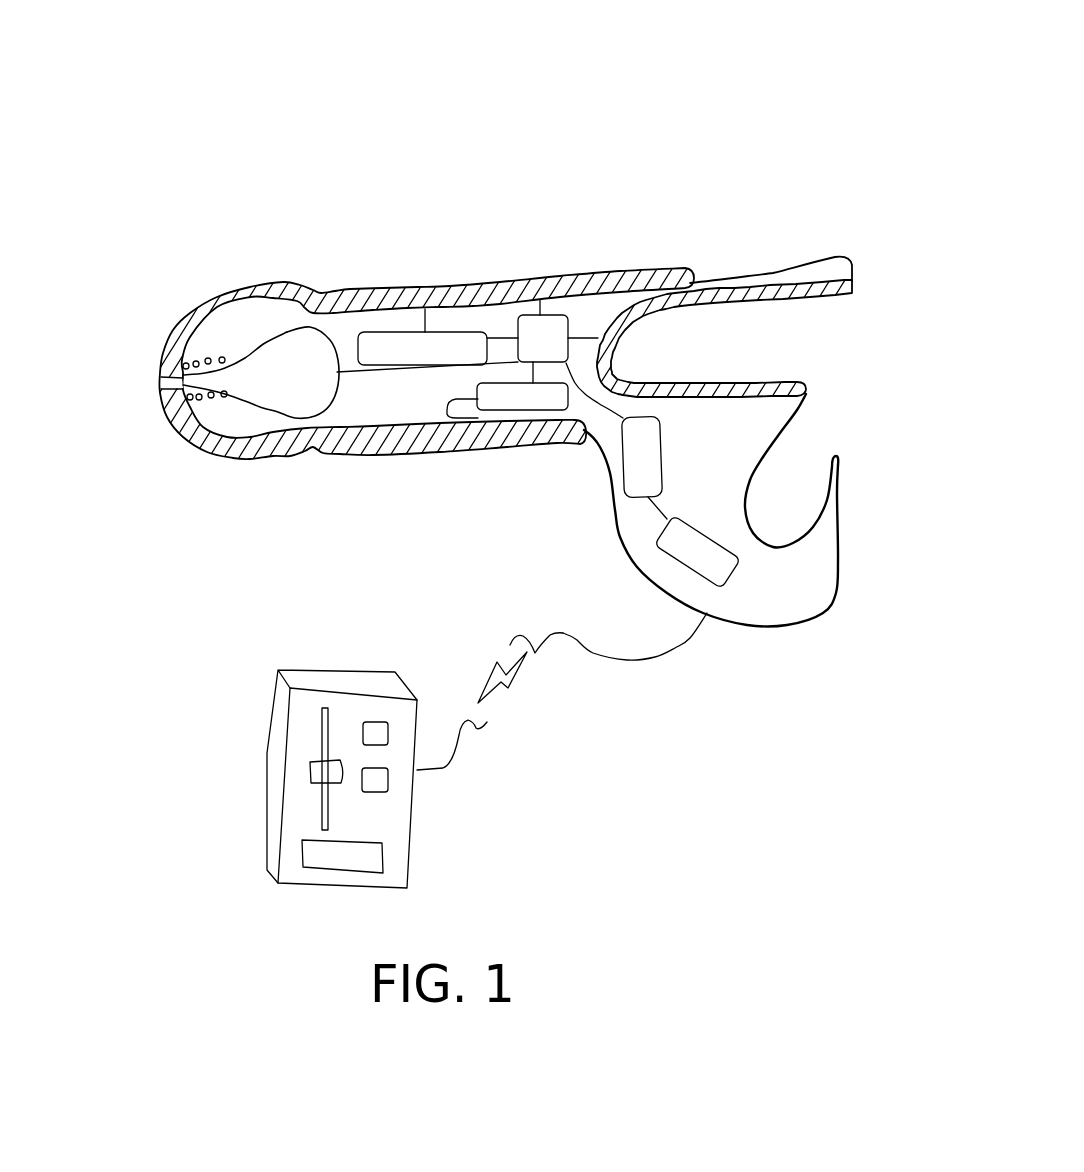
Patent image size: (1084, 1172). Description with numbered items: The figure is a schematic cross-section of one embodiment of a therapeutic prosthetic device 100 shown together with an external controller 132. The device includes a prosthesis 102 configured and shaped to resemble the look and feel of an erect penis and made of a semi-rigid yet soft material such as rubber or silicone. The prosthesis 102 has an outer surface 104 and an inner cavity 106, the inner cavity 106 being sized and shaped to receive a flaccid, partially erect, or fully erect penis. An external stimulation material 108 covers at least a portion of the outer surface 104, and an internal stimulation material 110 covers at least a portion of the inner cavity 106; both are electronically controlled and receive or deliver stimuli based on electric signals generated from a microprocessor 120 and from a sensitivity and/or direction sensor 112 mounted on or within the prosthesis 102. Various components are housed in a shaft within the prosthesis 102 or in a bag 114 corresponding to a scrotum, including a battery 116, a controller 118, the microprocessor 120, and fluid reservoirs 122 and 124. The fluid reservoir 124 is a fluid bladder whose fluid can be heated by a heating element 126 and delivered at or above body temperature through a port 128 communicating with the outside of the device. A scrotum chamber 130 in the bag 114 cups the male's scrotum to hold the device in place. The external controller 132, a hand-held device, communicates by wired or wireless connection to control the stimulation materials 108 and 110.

The therapeutic prosthetic device 100 is at (519, 46).
The prosthesis 102 is at (627, 131).
The outer surface 104 is at (789, 258).
The inner cavity 106 is at (849, 346).
The external stimulation material 108 is at (410, 270).
The internal stimulation material 110 is at (708, 321).
The sensitivity and/or direction sensor 112 is at (448, 348).
The bag 114 is at (778, 659).
The battery 116 is at (687, 552).
The controller 118 is at (637, 452).
The microprocessor 120 is at (547, 338).
The fluid reservoir 122 is at (502, 393).
The fluid reservoir 124 is at (288, 392).
The heating element 126 is at (207, 398).
The port 128 is at (150, 389).
The scrotum chamber 130 is at (814, 457).
The external controller 132 is at (246, 818).